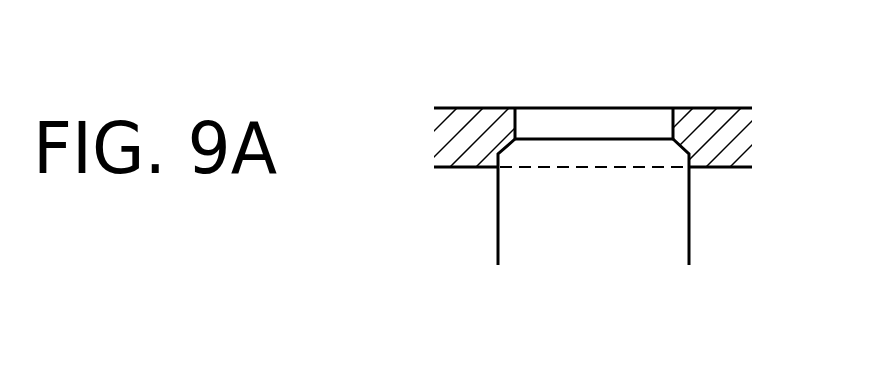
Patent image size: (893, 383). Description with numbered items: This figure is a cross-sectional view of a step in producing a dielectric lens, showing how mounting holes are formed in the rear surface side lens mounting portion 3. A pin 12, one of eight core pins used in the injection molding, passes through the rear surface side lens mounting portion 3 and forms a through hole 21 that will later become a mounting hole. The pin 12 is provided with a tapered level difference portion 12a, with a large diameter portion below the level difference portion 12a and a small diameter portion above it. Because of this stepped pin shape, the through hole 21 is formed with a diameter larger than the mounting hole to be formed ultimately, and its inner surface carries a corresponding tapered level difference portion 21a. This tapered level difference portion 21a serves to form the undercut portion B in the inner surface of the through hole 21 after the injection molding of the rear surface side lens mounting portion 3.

The rear surface side lens mounting portion 3 is at (722, 120).
The through hole 21 is at (670, 125).
The tapered level difference portion 12a is at (512, 135).
The tapered level difference portion 21a is at (683, 152).
The pin 12 is at (687, 213).
The undercut portion B is at (503, 157).